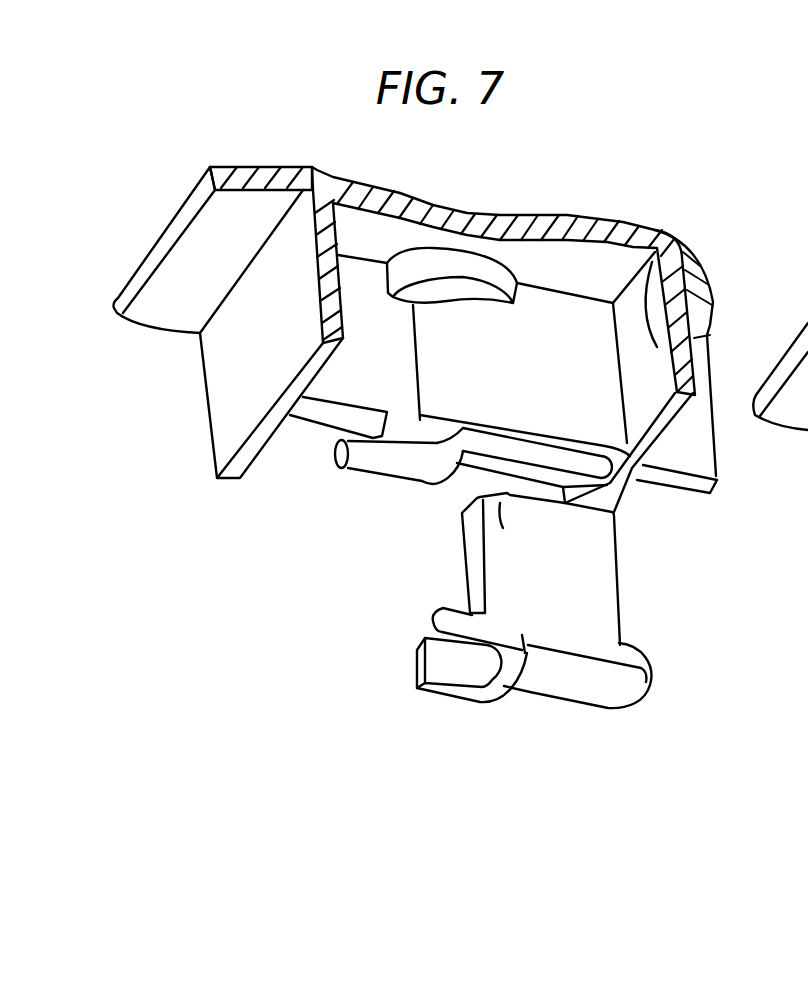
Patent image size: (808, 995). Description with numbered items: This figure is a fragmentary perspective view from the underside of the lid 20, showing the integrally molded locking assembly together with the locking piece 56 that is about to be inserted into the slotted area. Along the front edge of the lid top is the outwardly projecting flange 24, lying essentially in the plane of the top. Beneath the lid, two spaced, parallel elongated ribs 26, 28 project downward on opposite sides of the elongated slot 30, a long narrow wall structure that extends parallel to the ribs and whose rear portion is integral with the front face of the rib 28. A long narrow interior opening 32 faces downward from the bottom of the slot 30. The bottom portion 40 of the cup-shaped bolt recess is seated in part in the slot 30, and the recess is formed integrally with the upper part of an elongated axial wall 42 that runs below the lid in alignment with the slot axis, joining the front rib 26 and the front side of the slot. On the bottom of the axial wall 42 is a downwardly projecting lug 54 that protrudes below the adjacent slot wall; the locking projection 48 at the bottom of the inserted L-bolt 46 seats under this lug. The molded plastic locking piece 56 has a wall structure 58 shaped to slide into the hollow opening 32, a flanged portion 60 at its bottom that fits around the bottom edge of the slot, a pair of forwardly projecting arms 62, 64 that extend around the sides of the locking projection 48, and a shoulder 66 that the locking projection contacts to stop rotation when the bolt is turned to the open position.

The lid 20 is at (589, 223).
The outwardly projecting flange 24 is at (263, 182).
The rib 26 is at (240, 408).
The rib 28 is at (680, 260).
The elongated slot 30 is at (575, 416).
The interior opening 32 is at (488, 447).
The bottom portion of the bolt recess 40 is at (463, 276).
The axial wall 42 is at (319, 413).
The L-bolt 46 is at (458, 430).
The locking projection 48 is at (364, 467).
The lug 54 is at (414, 440).
The locking piece 56 is at (579, 559).
The wall structure 58 is at (587, 596).
The flanged portion 60 is at (597, 687).
The forwardly projecting arm 62 is at (438, 618).
The forwardly projecting arm 64 is at (415, 660).
The shoulder 66 is at (525, 653).